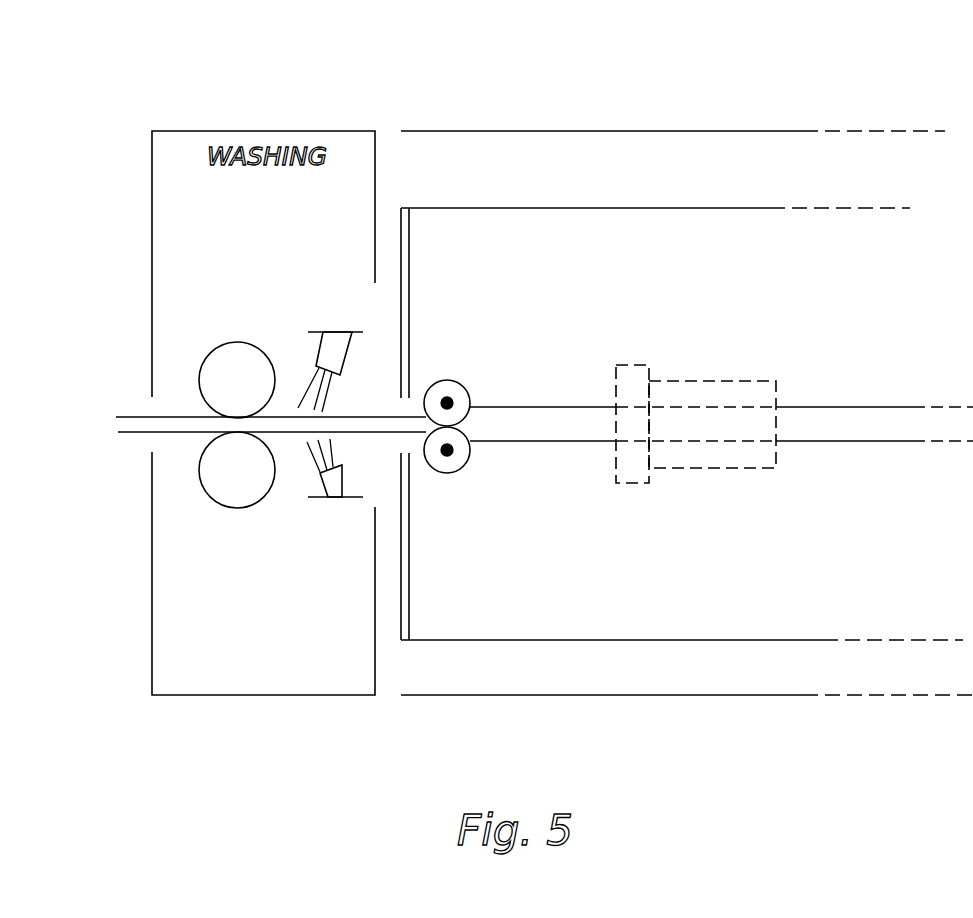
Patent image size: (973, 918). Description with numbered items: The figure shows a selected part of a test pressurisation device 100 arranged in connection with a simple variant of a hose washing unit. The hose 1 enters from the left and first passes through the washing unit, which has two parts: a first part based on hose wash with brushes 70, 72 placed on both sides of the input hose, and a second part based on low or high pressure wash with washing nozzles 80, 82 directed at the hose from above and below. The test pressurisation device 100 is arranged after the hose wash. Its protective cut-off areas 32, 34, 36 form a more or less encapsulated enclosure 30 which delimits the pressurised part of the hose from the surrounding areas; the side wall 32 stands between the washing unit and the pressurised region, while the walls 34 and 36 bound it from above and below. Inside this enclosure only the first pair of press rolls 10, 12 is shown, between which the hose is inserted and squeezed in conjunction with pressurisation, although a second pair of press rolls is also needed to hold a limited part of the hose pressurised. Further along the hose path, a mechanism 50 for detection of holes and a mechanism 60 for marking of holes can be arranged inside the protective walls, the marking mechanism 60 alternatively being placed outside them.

The test pressurisation device 100 is at (573, 104).
The enclosure 30 is at (682, 395).
The protective cut-off area 32 is at (410, 273).
The protective cut-off area 34 is at (670, 210).
The protective cut-off area 36 is at (508, 638).
The sheet 1 is at (131, 415).
The press roll 10 is at (463, 385).
The press roll 12 is at (446, 473).
The mechanism for detection 50 is at (634, 487).
The mechanism for marking 60 is at (712, 470).
The brush 70 is at (237, 342).
The brush 72 is at (237, 508).
The washing nozzle 80 is at (338, 332).
The washing nozzle 82 is at (330, 497).